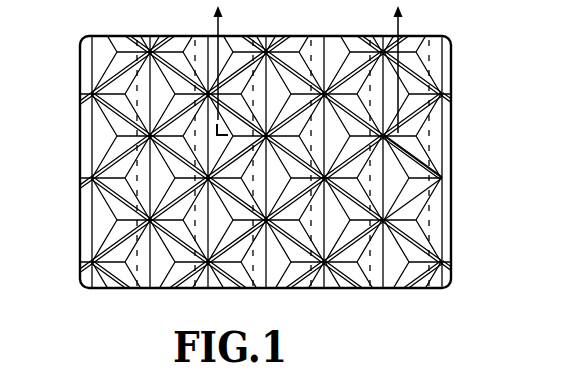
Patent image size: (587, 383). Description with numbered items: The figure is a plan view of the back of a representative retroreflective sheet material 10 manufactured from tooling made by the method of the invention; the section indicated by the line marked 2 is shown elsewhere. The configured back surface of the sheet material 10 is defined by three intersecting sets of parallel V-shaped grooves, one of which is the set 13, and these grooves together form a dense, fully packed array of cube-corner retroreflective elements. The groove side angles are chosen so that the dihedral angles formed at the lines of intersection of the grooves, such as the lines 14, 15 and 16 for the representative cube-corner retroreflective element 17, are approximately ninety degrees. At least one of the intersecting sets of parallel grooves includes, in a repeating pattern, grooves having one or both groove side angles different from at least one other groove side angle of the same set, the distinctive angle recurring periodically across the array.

The retroreflective sheet material 10 is at (110, 27).
The set of parallel V-shaped grooves 13 is at (92, 262).
The line of intersection of grooves 14 is at (424, 200).
The line of intersection of grooves 15 is at (430, 168).
The line of intersection of grooves 16 is at (428, 152).
The cube-corner retroreflective element 17 is at (431, 181).
The section line of FIG. 2 is at (307, 67).